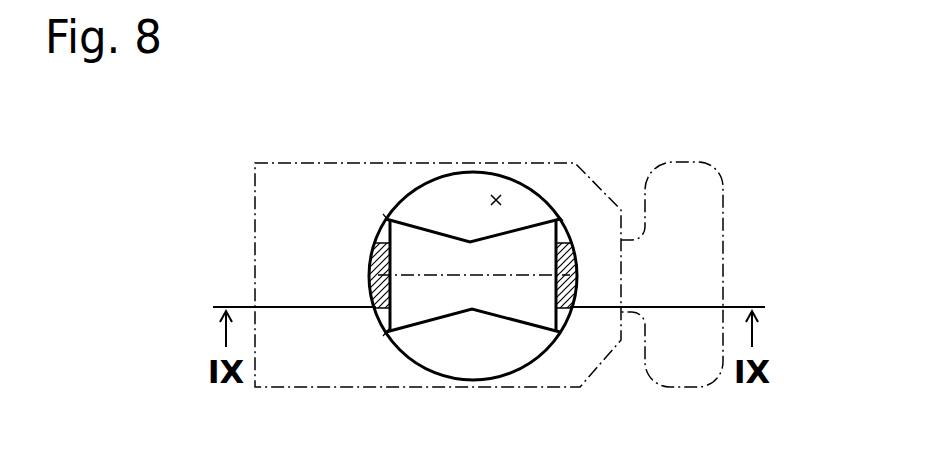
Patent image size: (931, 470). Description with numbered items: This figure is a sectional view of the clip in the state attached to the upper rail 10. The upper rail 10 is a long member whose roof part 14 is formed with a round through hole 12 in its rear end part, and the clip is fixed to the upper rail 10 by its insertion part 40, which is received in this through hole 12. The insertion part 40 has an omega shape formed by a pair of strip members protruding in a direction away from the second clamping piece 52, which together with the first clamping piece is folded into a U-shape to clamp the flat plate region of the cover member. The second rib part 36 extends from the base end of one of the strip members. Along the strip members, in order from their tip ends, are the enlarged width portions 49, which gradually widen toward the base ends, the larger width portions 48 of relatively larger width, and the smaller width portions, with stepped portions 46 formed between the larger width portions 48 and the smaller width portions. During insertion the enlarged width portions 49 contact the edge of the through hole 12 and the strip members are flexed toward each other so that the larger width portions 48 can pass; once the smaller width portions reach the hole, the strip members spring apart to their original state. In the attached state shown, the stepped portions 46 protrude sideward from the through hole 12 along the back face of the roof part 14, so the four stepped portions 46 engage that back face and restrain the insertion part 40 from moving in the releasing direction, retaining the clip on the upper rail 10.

The upper rail 10 is at (355, 273).
The roof part 14 is at (196, 203).
The through hole 12 is at (496, 200).
The second rib part 36 is at (699, 191).
The insertion part 40 is at (448, 208).
The stepped portions 46 is at (383, 220).
The larger width portions 48 is at (383, 220).
The enlarged width portions 49 is at (442, 300).
The second clamping piece 52 is at (300, 363).